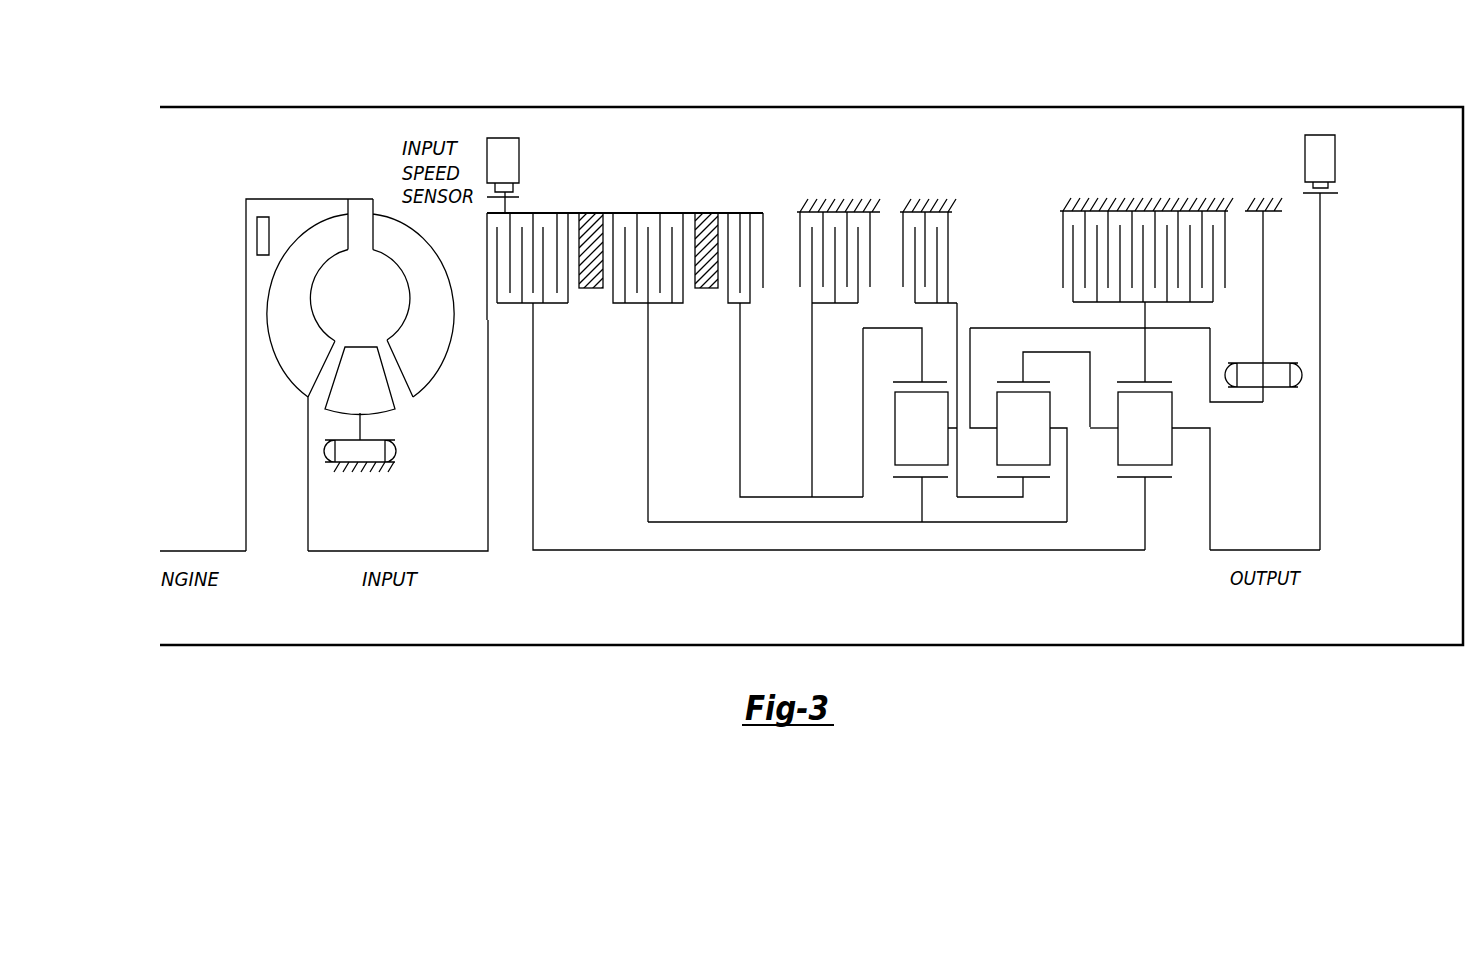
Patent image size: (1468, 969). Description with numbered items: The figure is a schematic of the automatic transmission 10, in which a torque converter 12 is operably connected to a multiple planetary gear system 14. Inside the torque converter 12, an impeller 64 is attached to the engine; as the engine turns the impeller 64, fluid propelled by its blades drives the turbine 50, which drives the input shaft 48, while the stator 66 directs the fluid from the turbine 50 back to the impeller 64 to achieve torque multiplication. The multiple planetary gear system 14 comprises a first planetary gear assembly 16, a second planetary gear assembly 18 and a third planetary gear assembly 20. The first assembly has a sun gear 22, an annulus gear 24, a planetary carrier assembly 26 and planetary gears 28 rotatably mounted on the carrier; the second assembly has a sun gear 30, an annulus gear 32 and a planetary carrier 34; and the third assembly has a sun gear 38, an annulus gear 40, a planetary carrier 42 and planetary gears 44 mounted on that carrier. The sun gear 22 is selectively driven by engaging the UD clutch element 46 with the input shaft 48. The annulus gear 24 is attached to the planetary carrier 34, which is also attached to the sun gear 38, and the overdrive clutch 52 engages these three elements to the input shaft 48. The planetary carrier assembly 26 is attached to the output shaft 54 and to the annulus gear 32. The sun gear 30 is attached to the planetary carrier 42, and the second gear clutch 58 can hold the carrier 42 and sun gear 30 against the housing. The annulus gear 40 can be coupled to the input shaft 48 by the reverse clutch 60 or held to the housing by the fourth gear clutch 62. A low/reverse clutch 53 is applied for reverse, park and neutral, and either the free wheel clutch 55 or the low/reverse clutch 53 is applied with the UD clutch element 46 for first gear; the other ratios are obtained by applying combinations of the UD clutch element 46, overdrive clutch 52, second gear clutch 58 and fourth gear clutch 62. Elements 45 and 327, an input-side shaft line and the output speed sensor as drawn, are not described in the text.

The automatic transmission 10 is at (1290, 100).
The torque converter 12 is at (262, 184).
The multiple planetary gear system 14 is at (857, 380).
The first planetary gear assembly 16 is at (1251, 411).
The second planetary gear assembly 18 is at (1083, 417).
The third planetary gear assembly 20 is at (926, 560).
The sun gear 22 is at (1172, 477).
The annulus gear 24 is at (1172, 382).
The planetary carrier assembly 26 is at (1093, 440).
The planetary gears 28 is at (1158, 446).
The sun gear 30 is at (1023, 497).
The annulus gear 32 is at (1037, 352).
The planetary carrier 34 is at (975, 428).
The sun gear 38 is at (893, 477).
The annulus gear 40 is at (911, 382).
The planetary carrier 42 is at (950, 423).
The planetary gears 44 is at (910, 408).
The input shaft 45 is at (572, 551).
The UD clutch element 46 is at (523, 220).
The input shaft 48 is at (323, 552).
The turbine 50 is at (272, 297).
The overdrive clutch 52 is at (615, 220).
The low/reverse clutch 53 is at (1173, 228).
The output shaft 54 is at (1305, 549).
The free wheel clutch 55 is at (1276, 372).
The second gear clutch 58 is at (942, 228).
The reverse clutch 60 is at (727, 220).
The fourth gear clutch 62 is at (806, 224).
The impeller 64 is at (387, 233).
The stator 66 is at (365, 390).
The output speed sensor 327 is at (1323, 134).